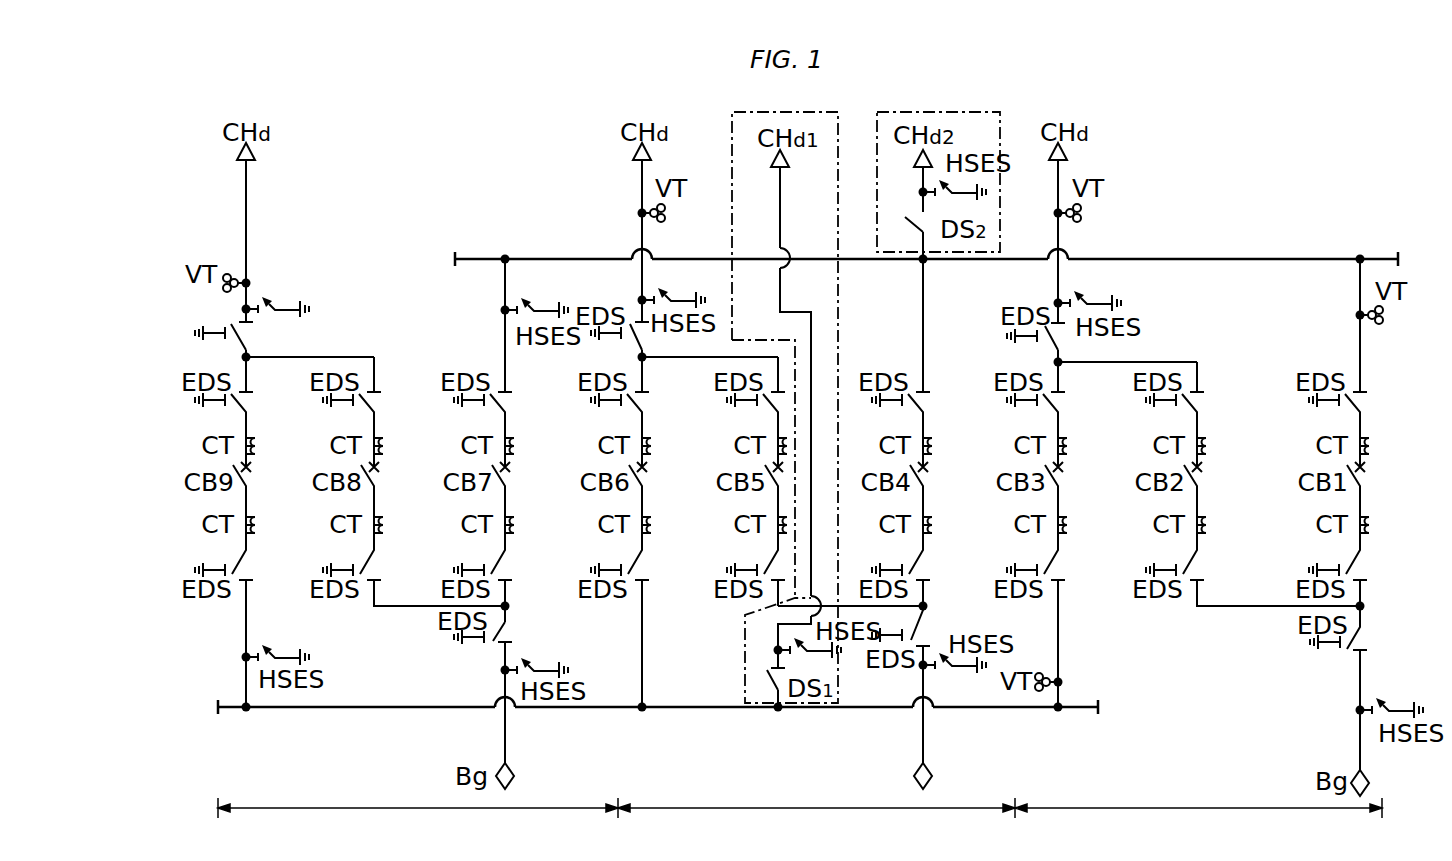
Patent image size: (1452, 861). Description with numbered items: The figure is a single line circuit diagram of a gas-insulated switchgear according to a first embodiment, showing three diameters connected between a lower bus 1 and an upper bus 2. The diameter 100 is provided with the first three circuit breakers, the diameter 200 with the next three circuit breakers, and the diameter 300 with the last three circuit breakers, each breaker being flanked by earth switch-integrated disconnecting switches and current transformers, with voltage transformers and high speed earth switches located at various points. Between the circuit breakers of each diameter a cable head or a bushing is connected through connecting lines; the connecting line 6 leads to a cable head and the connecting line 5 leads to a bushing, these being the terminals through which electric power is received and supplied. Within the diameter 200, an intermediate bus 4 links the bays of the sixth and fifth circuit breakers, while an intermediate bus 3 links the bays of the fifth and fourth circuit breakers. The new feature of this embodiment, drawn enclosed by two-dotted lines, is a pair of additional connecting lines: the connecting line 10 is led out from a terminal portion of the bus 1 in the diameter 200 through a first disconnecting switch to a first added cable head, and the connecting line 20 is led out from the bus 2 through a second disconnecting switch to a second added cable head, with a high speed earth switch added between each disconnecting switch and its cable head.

The bus 1 is at (708, 712).
The bus 2 is at (541, 257).
The bus 3 is at (846, 603).
The bus 4 is at (690, 362).
The connecting line 5 is at (508, 738).
The connecting line 6 is at (252, 216).
The connecting line 10 is at (781, 206).
The connecting line 20 is at (921, 182).
The diameter 100 is at (1155, 809).
The diameter 200 is at (775, 809).
The diameter 300 is at (345, 809).